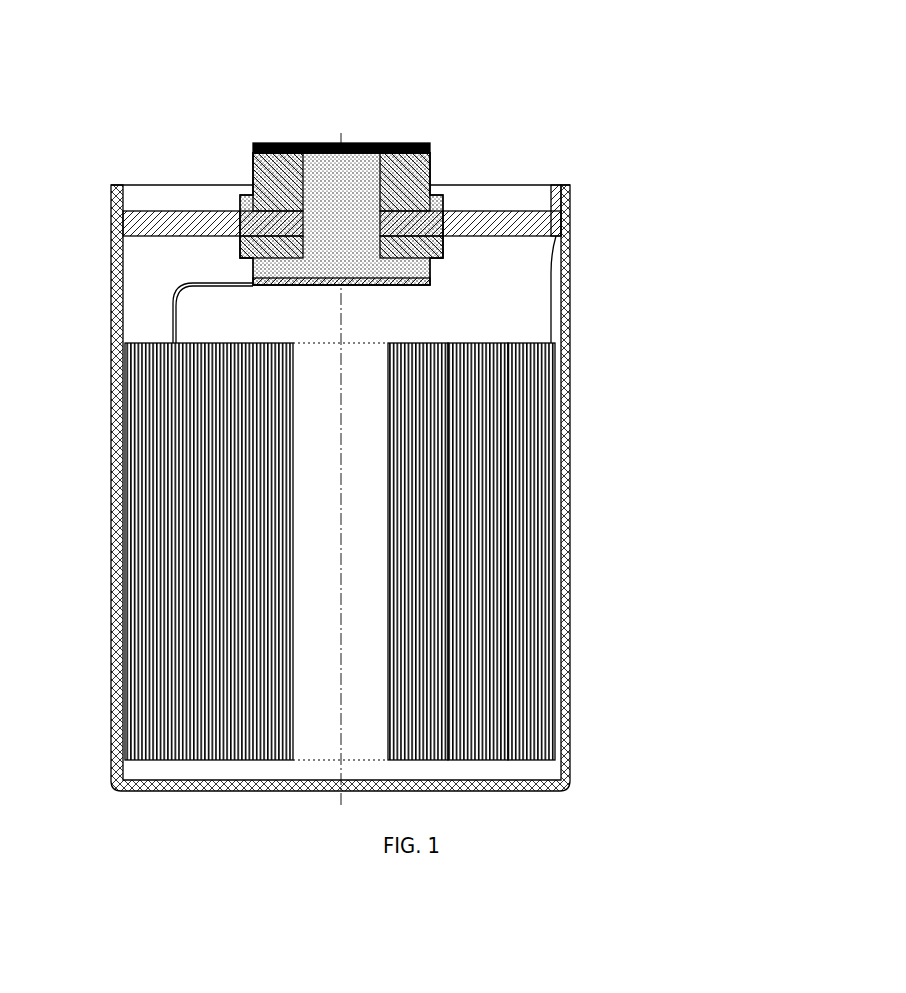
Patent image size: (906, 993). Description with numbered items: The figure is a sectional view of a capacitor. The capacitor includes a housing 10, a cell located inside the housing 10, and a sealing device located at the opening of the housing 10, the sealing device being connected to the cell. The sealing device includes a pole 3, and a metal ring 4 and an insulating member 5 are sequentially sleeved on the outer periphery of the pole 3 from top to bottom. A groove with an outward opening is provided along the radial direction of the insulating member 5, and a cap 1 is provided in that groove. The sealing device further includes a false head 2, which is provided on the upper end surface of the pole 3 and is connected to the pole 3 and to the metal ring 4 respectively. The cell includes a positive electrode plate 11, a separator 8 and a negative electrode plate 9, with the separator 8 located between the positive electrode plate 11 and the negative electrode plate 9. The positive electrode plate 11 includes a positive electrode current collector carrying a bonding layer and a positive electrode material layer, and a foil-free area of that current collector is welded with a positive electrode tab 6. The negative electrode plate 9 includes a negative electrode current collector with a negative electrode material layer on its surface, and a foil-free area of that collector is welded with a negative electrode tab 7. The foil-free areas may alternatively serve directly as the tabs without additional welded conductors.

The cap 1 is at (304, 488).
The false head 2 is at (282, 80).
The pole 3 is at (365, 146).
The metal ring 4 is at (403, 148).
The insulating member 5 is at (344, 167).
The positive electrode tab 6 is at (470, 239).
The negative electrode tab 7 is at (658, 294).
The separator 8 is at (577, 528).
The negative electrode plate 9 is at (607, 551).
The housing 10 is at (544, 551).
The positive electrode plate 11 is at (460, 551).